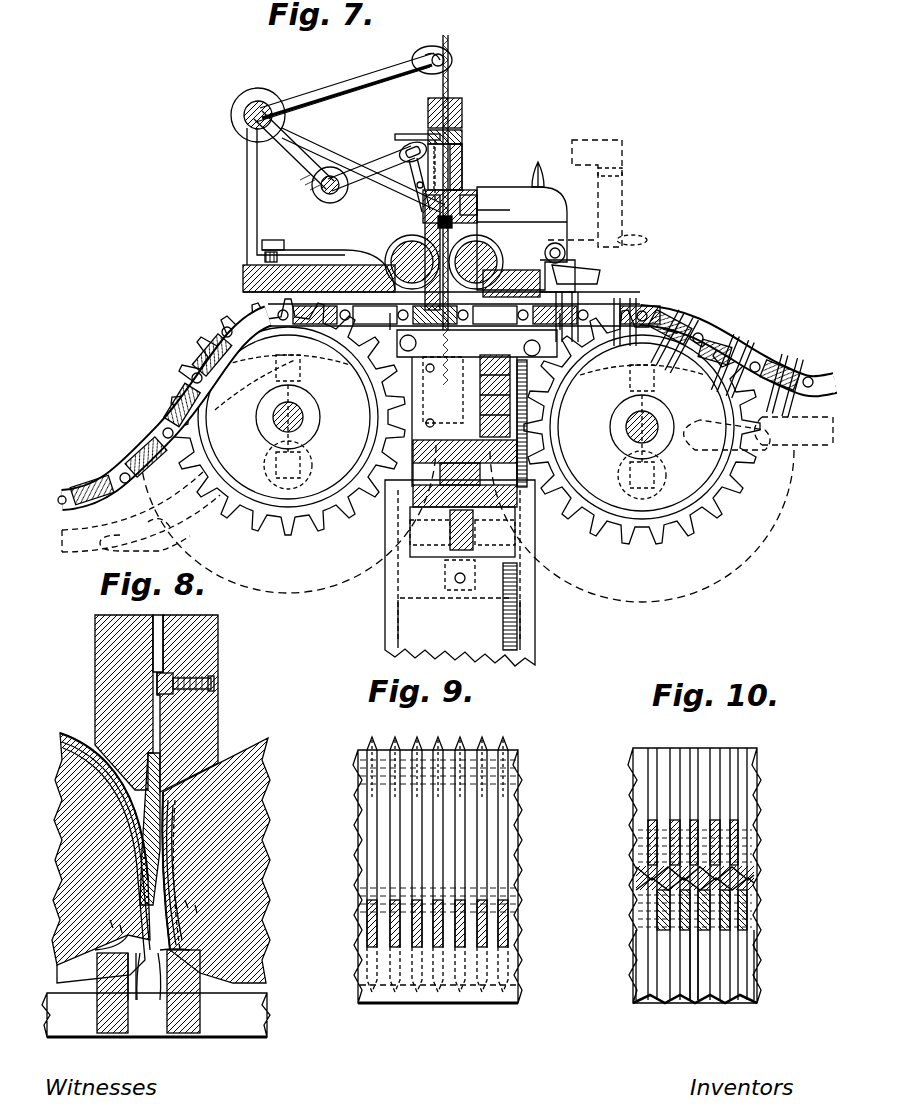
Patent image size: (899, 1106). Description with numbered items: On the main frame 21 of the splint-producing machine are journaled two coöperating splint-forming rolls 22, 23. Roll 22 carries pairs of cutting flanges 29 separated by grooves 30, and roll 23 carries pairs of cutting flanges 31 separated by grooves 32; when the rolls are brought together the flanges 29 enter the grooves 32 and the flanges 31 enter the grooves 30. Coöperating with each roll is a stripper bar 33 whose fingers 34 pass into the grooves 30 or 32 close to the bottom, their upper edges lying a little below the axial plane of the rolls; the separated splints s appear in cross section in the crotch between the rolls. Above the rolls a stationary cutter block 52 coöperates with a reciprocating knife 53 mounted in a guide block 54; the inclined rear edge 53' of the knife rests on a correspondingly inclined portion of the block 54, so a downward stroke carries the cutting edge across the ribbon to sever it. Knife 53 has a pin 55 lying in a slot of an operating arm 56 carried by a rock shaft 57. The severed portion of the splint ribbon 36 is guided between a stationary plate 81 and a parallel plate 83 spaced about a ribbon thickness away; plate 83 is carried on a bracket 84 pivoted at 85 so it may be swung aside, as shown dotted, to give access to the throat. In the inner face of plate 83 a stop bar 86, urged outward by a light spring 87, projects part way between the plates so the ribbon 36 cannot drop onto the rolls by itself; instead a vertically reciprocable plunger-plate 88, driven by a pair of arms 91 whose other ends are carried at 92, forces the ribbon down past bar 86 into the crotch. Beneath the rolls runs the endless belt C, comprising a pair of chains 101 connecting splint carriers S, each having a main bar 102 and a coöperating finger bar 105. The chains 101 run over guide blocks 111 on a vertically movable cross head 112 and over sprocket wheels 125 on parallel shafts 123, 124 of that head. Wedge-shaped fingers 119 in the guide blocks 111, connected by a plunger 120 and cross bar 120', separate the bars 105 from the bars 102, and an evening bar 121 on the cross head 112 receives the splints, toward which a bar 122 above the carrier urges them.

In FIG. 7, the main frame 21 is at (513, 636).
In FIG. 7, the splint-forming roll 22 is at (398, 250).
In FIG. 8, the splint-forming roll 22 is at (70, 793).
In FIG. 9, the splint-forming roll 22 is at (517, 865).
In FIG. 10, the splint-forming roll 22 is at (757, 760).
In FIG. 7, the splint-forming roll 23 is at (517, 227).
In FIG. 8, the splint-forming roll 23 is at (233, 783).
In FIG. 10, the splint-forming roll 23 is at (717, 967).
In FIG. 8, the cutting flanges 29 is at (73, 737).
In FIG. 9, the cutting flanges 29 is at (503, 750).
In FIG. 10, the cutting flanges 29 is at (737, 797).
In FIG. 8, the groove 30 is at (63, 740).
In FIG. 9, the groove 30 is at (473, 748).
In FIG. 10, the groove 30 is at (727, 762).
In FIG. 8, the cutting flanges 31 is at (207, 763).
In FIG. 10, the cutting flanges 31 is at (720, 927).
In FIG. 10, the grooves 32 is at (727, 947).
In FIG. 7, the stripper bar 33 is at (340, 256).
In FIG. 8, the stripper bar 33 is at (117, 1037).
In FIG. 9, the stripper bar 33 is at (420, 1003).
In FIG. 8, the fingers 34 is at (123, 940).
In FIG. 9, the fingers 34 is at (400, 927).
In FIG. 7, the splint ribbon 36 is at (449, 150).
In FIG. 8, the splint ribbon 36 is at (148, 747).
In FIG. 7, the stationary cutter block 52 is at (462, 108).
In FIG. 7, the reciprocating knife 53 is at (417, 144).
In FIG. 7, the rear edge of knife 53' is at (410, 118).
In FIG. 7, the guide block 54 is at (387, 153).
In FIG. 7, the pin 55 is at (412, 182).
In FIG. 7, the operating arm 56 is at (345, 165).
In FIG. 7, the rock shaft 57 is at (322, 190).
In FIG. 7, the stationary plate 81 is at (428, 217).
In FIG. 8, the stationary plate 81 is at (103, 662).
In FIG. 7, the plate 83 is at (460, 160).
In FIG. 8, the plate 83 is at (207, 710).
In FIG. 7, the arm or bracket 84 is at (500, 190).
In FIG. 7, the pivot 85 is at (580, 262).
In FIG. 7, the stop bar 86 is at (477, 190).
In FIG. 8, the stop bar 86 is at (190, 663).
In FIG. 7, the light spring 87 is at (452, 222).
In FIG. 8, the light spring 87 is at (214, 668).
In FIG. 7, the plunger-plate 88 is at (450, 90).
In FIG. 7, the arms 91 is at (337, 83).
In FIG. 7, the pivot hub 92 is at (262, 100).
In FIG. 7, the endless chains 101 is at (220, 325).
In FIG. 7, the main bar 102 is at (634, 312).
In FIG. 7, the bar 105 is at (665, 322).
In FIG. 7, the guide blocks 111 is at (453, 337).
In FIG. 7, the cross head 112 is at (388, 514).
In FIG. 7, the wedge shaped finger 119 is at (408, 372).
In FIG. 7, the plunger 120 is at (429, 553).
In FIG. 7, the cross bar 120' is at (425, 594).
In FIG. 7, the evening bar 121 is at (480, 358).
In FIG. 7, the bar 122 is at (493, 290).
In FIG. 7, the shaft 123 is at (285, 450).
In FIG. 7, the shaft 124 is at (660, 434).
In FIG. 7, the sprocket wheels 125 is at (283, 442).
In FIG. 7, the endless belt C is at (148, 435).
In FIG. 7, the splint carrier S is at (702, 330).
In FIG. 8, the sheet strip s is at (163, 977).
In FIG. 10, the sheet strip s is at (647, 877).